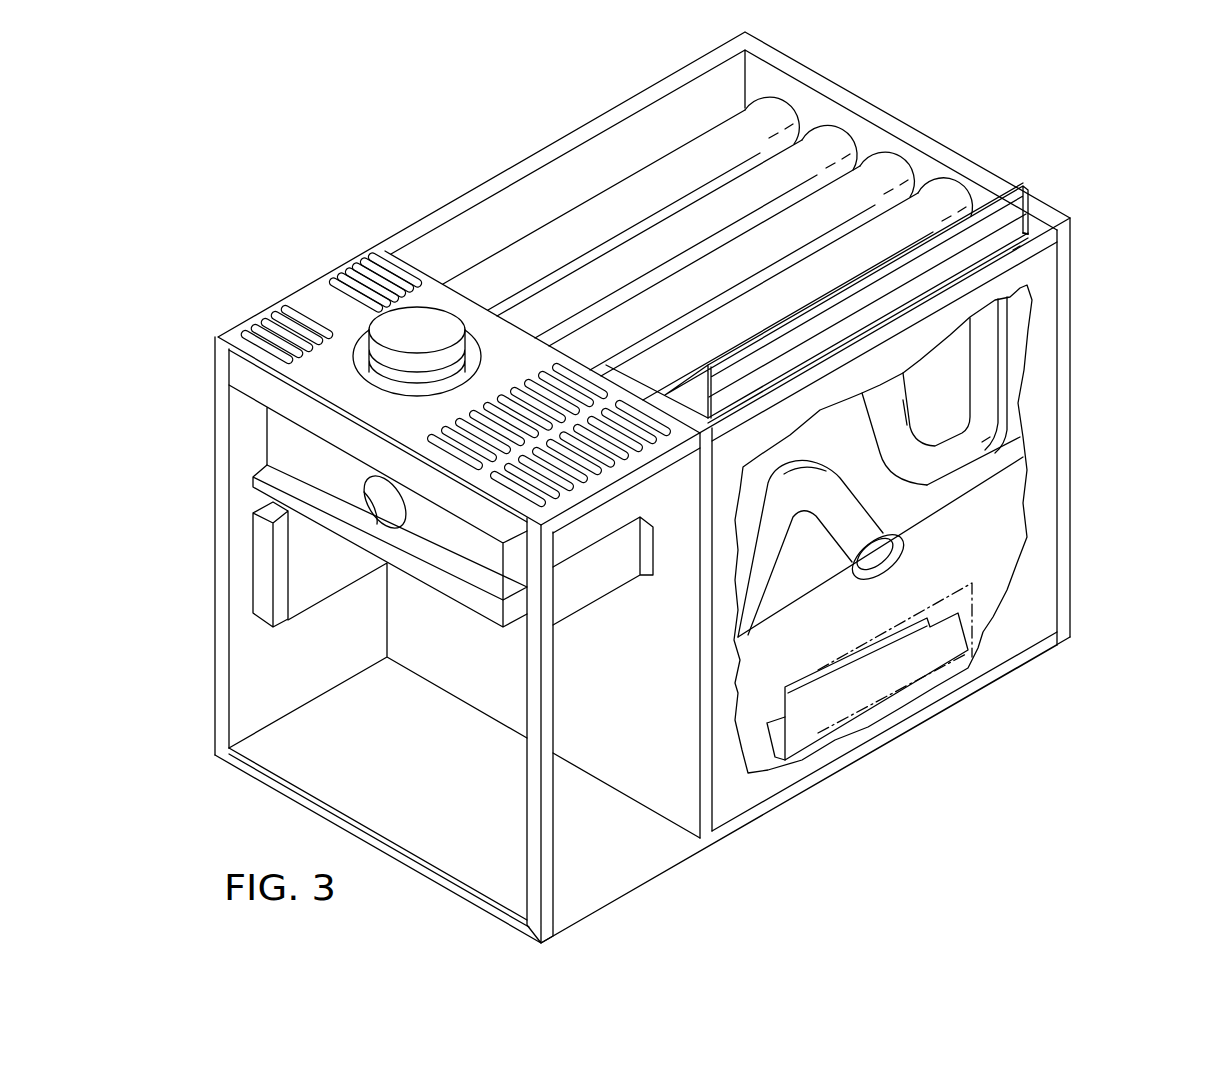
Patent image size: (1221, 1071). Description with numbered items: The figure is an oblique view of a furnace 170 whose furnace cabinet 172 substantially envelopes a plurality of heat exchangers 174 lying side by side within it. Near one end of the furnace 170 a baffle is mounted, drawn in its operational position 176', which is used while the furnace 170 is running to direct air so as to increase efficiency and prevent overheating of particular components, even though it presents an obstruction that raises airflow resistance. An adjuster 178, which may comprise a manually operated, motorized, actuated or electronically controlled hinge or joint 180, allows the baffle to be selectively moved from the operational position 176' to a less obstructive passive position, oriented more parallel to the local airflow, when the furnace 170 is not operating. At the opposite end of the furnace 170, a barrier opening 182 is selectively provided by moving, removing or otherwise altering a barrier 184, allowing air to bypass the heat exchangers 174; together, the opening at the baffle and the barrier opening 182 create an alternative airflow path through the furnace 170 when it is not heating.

The furnace 170 is at (288, 151).
The furnace cabinet 172 is at (1072, 506).
The heat exchangers 174 is at (612, 205).
The operational position of baffle 176' is at (849, 267).
The adjuster 178 is at (1013, 252).
The hinge and/or joint 180 is at (1025, 233).
The barrier opening 182 is at (965, 618).
The barrier 184 is at (862, 690).